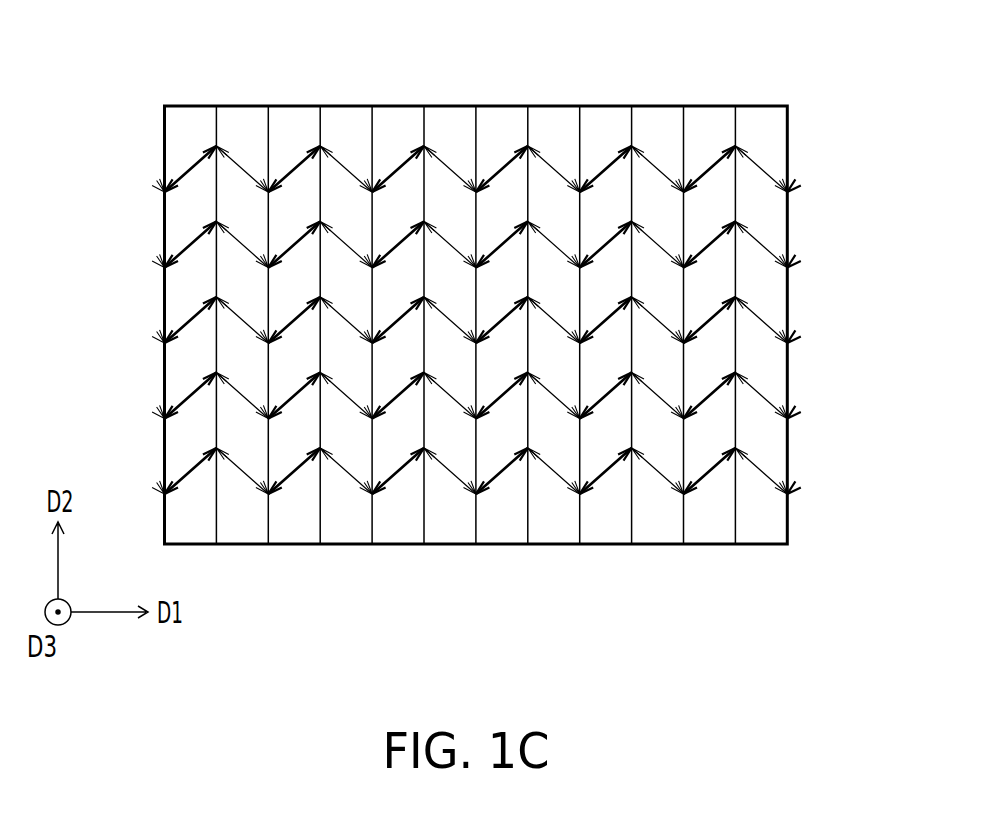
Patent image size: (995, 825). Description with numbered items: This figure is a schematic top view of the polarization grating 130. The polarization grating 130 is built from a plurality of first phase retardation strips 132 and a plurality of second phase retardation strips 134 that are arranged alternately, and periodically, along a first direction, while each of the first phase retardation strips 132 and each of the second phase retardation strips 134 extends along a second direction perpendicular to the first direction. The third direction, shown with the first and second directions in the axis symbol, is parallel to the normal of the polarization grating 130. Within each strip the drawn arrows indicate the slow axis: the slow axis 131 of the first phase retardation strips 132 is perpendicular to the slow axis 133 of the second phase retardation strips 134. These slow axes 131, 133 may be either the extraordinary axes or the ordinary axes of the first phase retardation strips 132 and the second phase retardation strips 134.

The polarization grating 130 is at (872, 605).
The slow axis of the first phase retardation strips 131 is at (187, 172).
The first phase retardation strips 132 is at (178, 120).
The slow axis of the second phase retardation strips 133 is at (242, 168).
The second phase retardation strips 134 is at (238, 120).